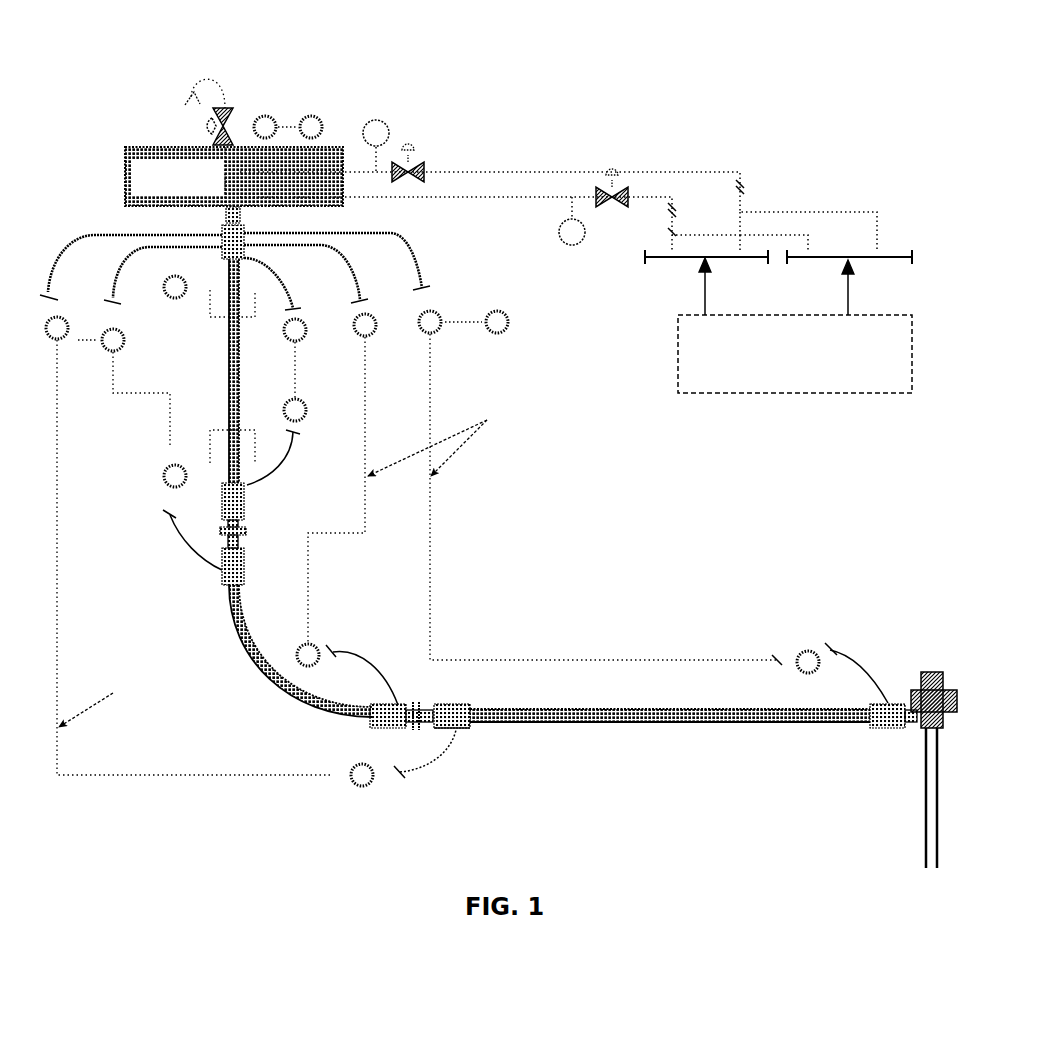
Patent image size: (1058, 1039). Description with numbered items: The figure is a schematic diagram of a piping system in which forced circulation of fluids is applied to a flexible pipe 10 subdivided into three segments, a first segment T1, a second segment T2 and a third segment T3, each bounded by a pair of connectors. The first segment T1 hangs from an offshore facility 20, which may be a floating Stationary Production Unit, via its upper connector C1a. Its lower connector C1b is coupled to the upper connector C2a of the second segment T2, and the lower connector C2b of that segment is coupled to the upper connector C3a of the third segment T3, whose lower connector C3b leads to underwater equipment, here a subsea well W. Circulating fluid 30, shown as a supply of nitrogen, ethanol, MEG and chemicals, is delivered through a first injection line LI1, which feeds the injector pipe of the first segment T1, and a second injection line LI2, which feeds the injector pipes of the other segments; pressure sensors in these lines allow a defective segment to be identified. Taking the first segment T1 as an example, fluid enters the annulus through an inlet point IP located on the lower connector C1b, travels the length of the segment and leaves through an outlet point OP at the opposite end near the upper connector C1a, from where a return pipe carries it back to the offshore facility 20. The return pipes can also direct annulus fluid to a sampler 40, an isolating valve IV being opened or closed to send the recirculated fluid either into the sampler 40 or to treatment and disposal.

The flexible pipe 10 is at (230, 840).
The offshore facility 20 is at (210, 194).
The circulating fluid 30 is at (772, 398).
The sampler 40 is at (193, 110).
The isolating valve IV is at (236, 111).
The first injection line LI1 is at (547, 168).
The second injection line LI2 is at (524, 203).
The upper connector of the first segment C1a is at (216, 223).
The lower connector of the first segment C1b is at (246, 503).
The upper connector of the second segment C2a is at (220, 587).
The lower connector of the second segment C2b is at (368, 728).
The upper connector of the third segment C3a is at (466, 699).
The lower connector of the third segment C3b is at (882, 733).
The first segment T1 is at (226, 340).
The second segment T2 is at (248, 665).
The third segment T3 is at (676, 732).
The inlet point IP is at (398, 702).
The outlet point OP is at (458, 732).
The subsea well W is at (932, 670).